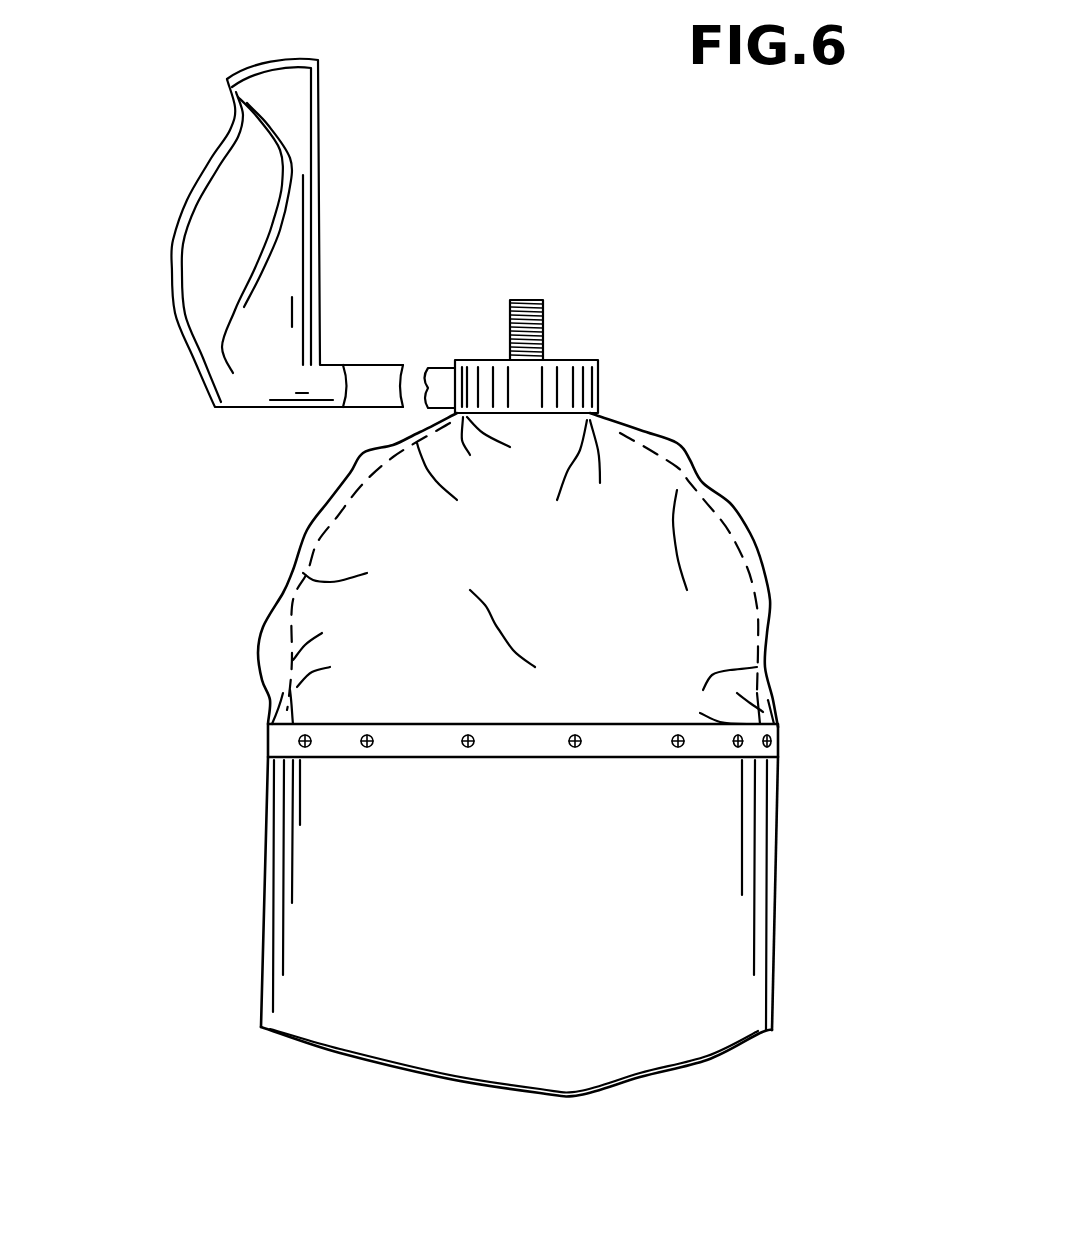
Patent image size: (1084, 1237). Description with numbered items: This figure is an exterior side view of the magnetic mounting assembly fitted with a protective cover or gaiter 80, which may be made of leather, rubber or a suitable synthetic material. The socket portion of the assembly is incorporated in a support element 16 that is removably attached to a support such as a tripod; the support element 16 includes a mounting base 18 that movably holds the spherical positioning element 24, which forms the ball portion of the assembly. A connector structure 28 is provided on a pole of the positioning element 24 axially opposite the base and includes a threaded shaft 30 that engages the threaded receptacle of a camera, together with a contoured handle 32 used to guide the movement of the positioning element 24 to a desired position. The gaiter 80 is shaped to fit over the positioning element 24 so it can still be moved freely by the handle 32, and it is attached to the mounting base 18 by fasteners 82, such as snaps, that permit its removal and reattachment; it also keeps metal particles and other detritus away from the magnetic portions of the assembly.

The support element 16 is at (780, 804).
The mounting base 18 is at (418, 1035).
The positioning element 24 is at (743, 523).
The connector structure 28 is at (460, 356).
The threaded shaft 30 is at (545, 335).
The handle 32 is at (227, 147).
The gaiter 80 is at (687, 437).
The fasteners 82 is at (267, 748).